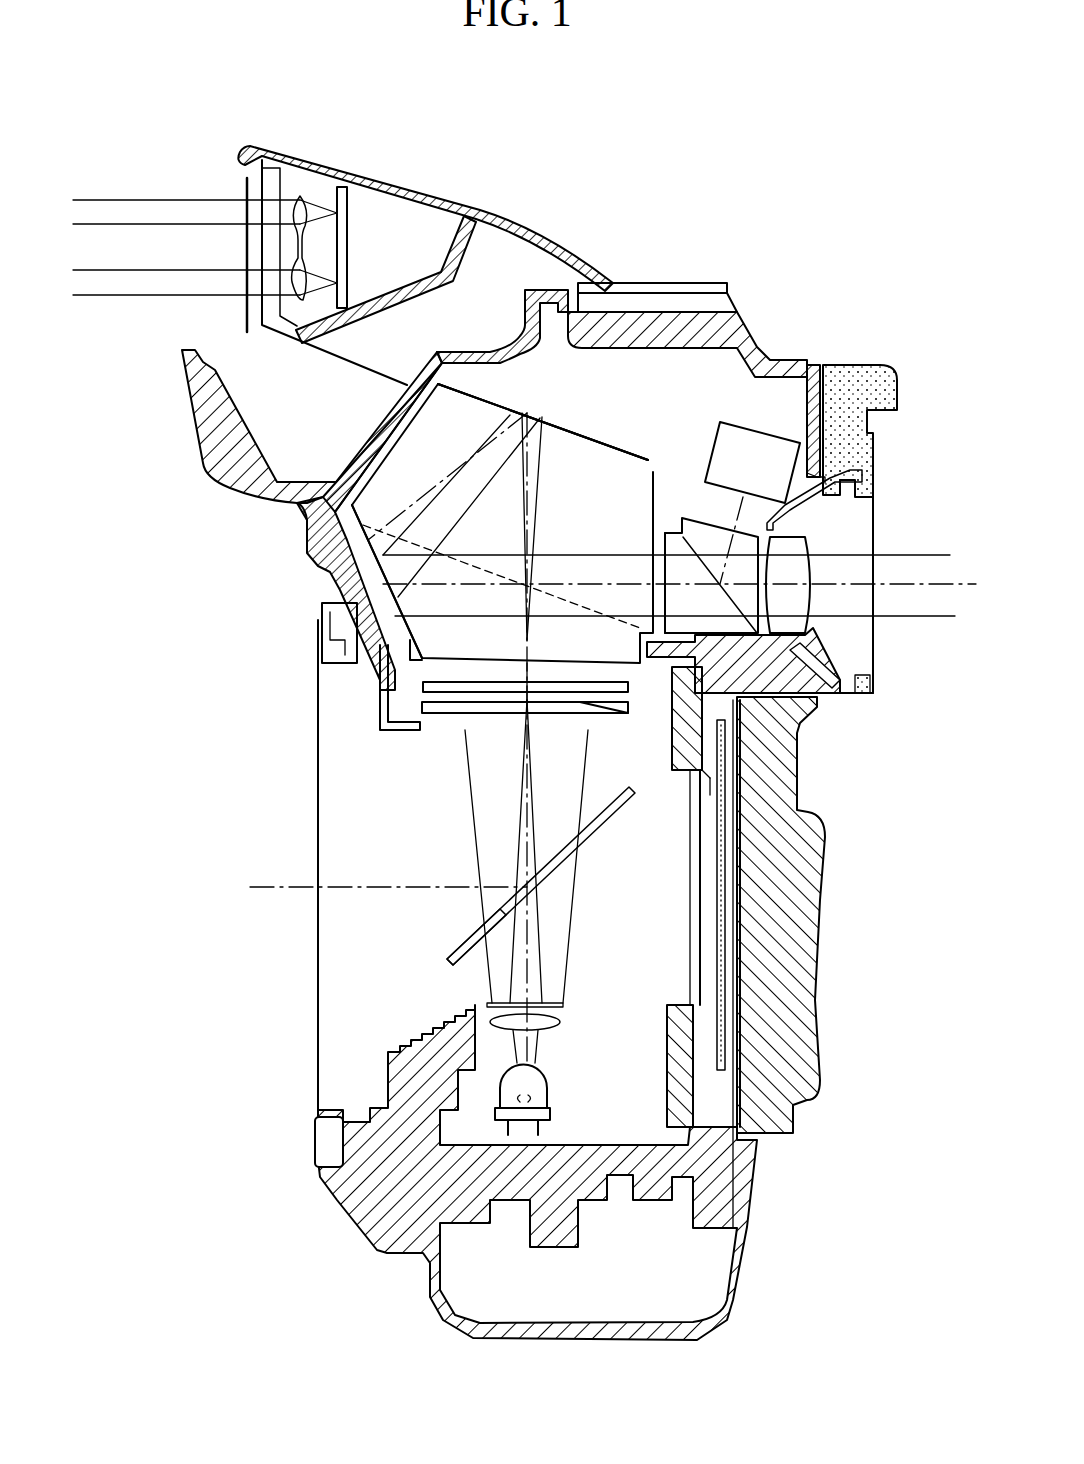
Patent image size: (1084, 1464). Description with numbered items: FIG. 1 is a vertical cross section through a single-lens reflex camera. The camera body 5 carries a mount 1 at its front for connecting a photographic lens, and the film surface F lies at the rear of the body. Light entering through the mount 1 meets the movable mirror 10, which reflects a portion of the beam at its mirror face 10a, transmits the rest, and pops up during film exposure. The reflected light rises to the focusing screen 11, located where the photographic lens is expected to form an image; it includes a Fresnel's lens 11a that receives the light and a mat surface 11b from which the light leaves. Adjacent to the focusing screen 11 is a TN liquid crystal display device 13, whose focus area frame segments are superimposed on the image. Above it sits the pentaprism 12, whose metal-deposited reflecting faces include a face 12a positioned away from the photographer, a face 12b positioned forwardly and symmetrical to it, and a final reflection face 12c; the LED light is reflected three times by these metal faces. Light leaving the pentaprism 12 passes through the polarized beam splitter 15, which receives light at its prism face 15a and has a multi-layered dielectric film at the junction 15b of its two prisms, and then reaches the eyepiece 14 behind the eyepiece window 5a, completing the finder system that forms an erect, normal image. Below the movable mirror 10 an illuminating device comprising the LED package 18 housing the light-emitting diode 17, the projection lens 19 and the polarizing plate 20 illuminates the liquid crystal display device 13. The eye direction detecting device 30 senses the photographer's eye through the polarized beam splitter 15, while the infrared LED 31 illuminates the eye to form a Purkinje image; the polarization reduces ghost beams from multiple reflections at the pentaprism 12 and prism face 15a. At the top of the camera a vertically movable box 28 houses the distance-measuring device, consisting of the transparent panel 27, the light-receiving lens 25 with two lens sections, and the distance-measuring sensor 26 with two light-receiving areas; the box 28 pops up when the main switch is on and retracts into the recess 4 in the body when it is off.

The mount 1 is at (315, 1135).
The recess 4 is at (275, 433).
The body 5 is at (826, 912).
The eyepiece window 5a is at (830, 605).
The movable mirror 10 is at (612, 817).
The mirror face 10a is at (467, 942).
The focusing screen 11 is at (462, 710).
The Fresnel's lens 11a is at (557, 715).
The mat surface 11b is at (626, 700).
The pentaprism 12 is at (612, 442).
The face 12a is at (560, 445).
The face 12b is at (543, 422).
The final reflection face 12c is at (363, 547).
The TN liquid crystal display device 13 is at (420, 687).
The eyepiece 14 is at (817, 565).
The polarized beam splitter 15 is at (663, 496).
The prism face 15a is at (655, 545).
The junction 15b is at (712, 555).
The light-emitting diode 17 is at (550, 1112).
The LED package 18 is at (548, 1090).
The projection lens 19 is at (560, 1020).
The polarizing plate 20 is at (565, 1003).
The light-receiving lens 25 is at (300, 300).
The distance-measuring sensor 26 is at (348, 218).
The transparent panel 27 is at (245, 316).
The vertically movable box 28 is at (455, 203).
The eye direction detecting device 30 is at (763, 433).
The LED 31 is at (820, 697).
The film surface F is at (722, 948).